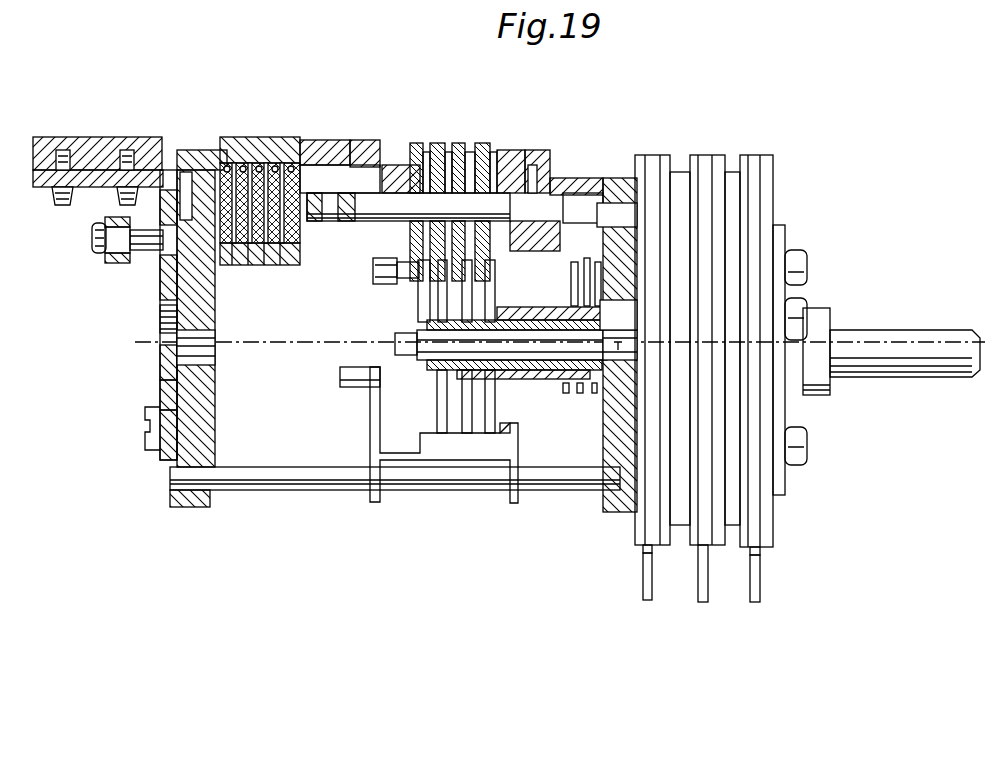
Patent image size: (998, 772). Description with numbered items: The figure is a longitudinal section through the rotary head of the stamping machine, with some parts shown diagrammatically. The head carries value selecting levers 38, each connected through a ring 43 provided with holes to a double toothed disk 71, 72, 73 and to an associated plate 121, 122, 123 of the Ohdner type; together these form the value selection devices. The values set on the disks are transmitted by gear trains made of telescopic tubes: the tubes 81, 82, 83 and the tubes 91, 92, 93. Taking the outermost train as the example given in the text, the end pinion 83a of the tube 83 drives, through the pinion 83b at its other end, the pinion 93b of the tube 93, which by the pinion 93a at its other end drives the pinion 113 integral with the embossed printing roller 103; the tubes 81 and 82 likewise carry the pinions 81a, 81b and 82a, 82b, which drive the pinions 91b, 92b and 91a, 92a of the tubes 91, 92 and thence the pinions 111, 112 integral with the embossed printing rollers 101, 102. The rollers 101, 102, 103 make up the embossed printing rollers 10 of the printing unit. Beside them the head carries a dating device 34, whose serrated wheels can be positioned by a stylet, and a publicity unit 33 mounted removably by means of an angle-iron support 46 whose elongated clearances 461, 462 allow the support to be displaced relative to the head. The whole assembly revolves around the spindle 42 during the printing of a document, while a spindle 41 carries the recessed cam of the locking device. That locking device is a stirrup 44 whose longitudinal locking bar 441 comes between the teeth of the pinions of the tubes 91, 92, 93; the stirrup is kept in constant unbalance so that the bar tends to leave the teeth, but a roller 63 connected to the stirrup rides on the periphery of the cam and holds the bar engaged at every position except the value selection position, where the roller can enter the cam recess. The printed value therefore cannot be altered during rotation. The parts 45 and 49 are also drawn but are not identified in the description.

The publicity unit 33 is at (113, 135).
The dating device 34 is at (262, 137).
The embossed printing rollers 10 is at (460, 112).
The embossed roller 101 is at (432, 150).
The embossed roller 102 is at (468, 150).
The embossed roller 103 is at (492, 150).
The pinion 111 is at (446, 150).
The pinion 112 is at (477, 150).
The pinion 113 is at (500, 152).
The spindle 42 is at (290, 345).
The spindle 41 is at (926, 332).
The support 46 is at (162, 283).
The elongated clearance 461 is at (163, 312).
The elongated clearance 462 is at (155, 395).
The motor 49 is at (115, 262).
The bottom bar 45 is at (315, 487).
The stirrup 44 is at (460, 462).
The longitudinal locking bar 441 is at (507, 432).
The roller 63 is at (352, 380).
The telescopic tube 91 is at (540, 333).
The telescopic tube 92 is at (536, 310).
The telescopic tube 93 is at (520, 322).
The pinion 91a is at (594, 393).
The pinion 92a is at (580, 393).
The pinion 93a is at (566, 393).
The pinion 91b is at (437, 383).
The pinion 92b is at (462, 400).
The pinion 93b is at (495, 402).
The telescopic tube 81 is at (626, 358).
The telescopic tube 82 is at (660, 290).
The telescopic tube 83 is at (786, 350).
The end pinion 81a is at (640, 232).
The pinion 81b is at (610, 274).
The end pinion 82a is at (690, 275).
The pinion 82b is at (586, 262).
The end pinion 83a is at (745, 270).
The pinion 83b is at (572, 275).
The double toothed disk 71 is at (632, 548).
The double toothed disk 72 is at (697, 548).
The double toothed disk 73 is at (748, 550).
The plate 121 is at (660, 550).
The plate 122 is at (716, 550).
The plate 123 is at (770, 520).
The ring 43 is at (645, 552).
The value selecting lever 38 is at (646, 600).